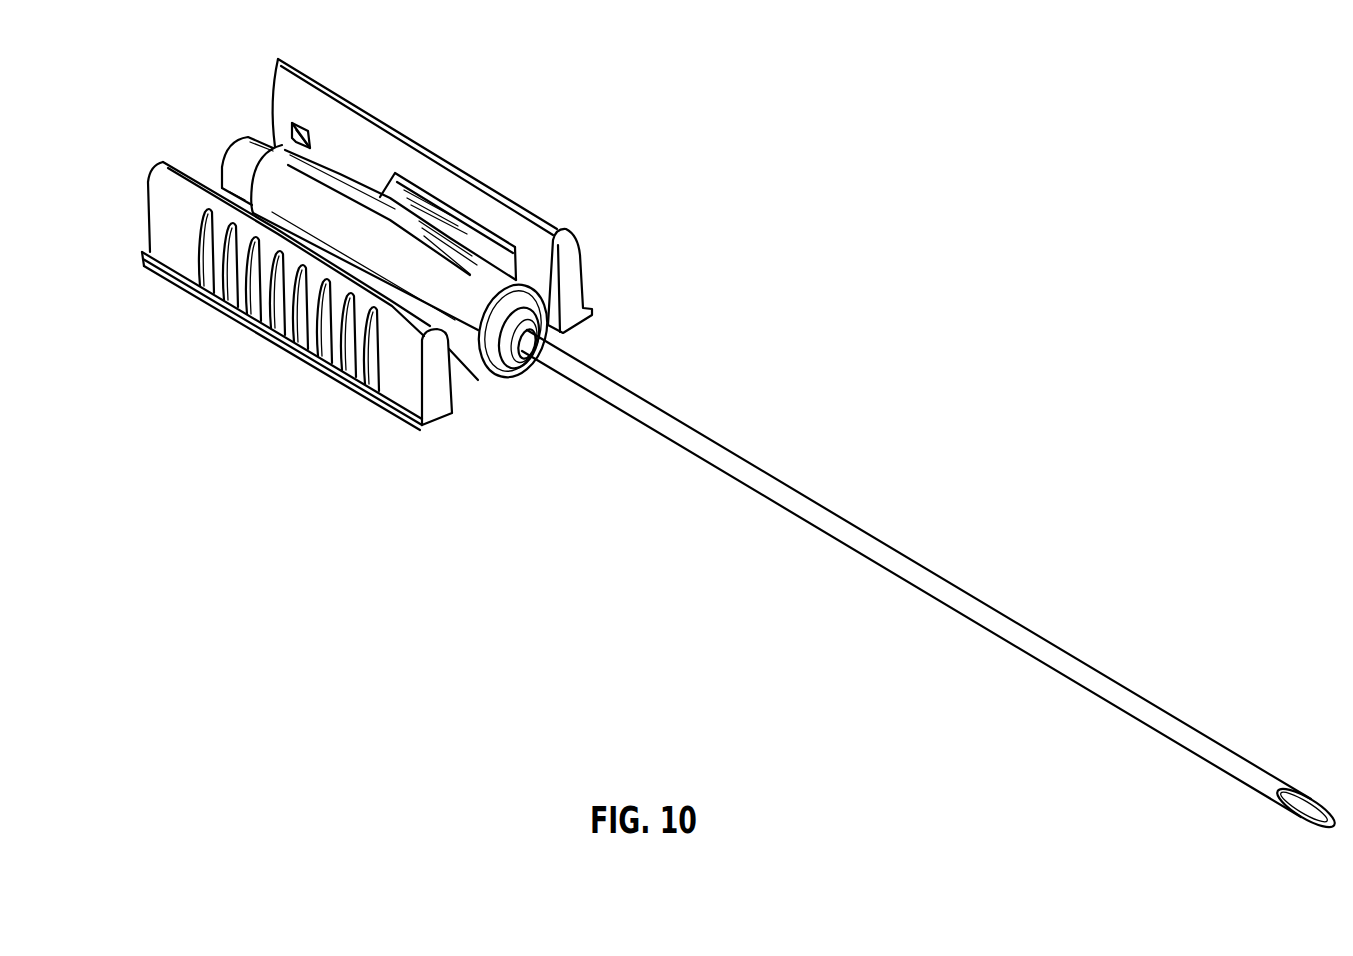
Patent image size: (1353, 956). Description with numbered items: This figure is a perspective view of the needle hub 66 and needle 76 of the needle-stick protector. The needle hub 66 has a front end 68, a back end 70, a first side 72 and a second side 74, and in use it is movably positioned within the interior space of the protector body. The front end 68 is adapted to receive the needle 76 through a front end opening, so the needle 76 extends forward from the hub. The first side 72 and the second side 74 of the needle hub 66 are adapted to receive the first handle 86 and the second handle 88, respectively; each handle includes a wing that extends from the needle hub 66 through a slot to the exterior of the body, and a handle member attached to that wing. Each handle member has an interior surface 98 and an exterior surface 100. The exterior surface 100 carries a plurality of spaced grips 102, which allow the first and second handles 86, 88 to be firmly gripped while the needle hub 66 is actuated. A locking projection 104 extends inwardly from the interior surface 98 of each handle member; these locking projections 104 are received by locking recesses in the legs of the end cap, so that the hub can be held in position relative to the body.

The needle hub 66 is at (402, 228).
The front end 68 is at (522, 297).
The back end 70 is at (227, 152).
The first side 72 is at (337, 163).
The second side 74 is at (462, 348).
The needle 76 is at (958, 588).
The first handle 86 is at (303, 68).
The second handle 88 is at (162, 279).
The interior surface 98 is at (507, 218).
The exterior surface 100 is at (403, 387).
The grips 102 is at (231, 302).
The locking projection 104 is at (290, 128).